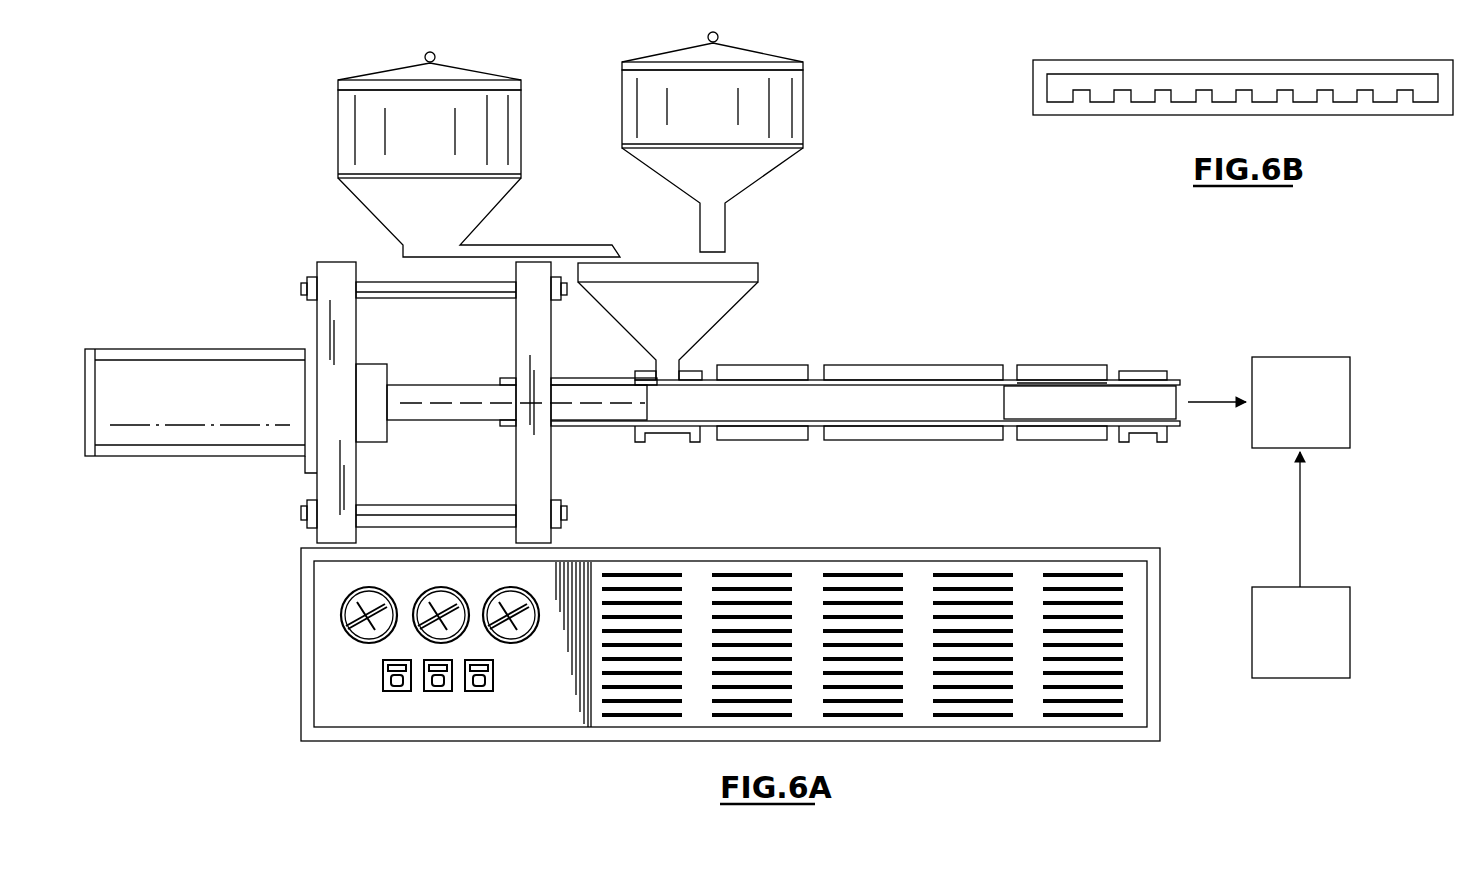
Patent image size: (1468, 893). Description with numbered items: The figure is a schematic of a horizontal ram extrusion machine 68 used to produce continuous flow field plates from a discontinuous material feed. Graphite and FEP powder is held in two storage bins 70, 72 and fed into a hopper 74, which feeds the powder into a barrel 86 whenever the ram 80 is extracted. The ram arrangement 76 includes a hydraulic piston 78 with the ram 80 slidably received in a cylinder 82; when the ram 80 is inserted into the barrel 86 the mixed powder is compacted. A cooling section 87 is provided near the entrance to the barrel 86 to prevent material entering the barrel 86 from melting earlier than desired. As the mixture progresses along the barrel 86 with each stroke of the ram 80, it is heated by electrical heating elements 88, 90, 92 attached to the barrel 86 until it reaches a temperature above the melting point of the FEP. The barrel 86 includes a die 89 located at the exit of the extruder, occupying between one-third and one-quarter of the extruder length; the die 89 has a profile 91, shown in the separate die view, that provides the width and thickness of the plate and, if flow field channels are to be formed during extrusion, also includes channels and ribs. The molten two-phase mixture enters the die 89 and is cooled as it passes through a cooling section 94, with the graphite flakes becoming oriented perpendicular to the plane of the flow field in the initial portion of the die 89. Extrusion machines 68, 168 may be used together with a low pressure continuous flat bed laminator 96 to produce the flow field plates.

In FIG. 6A, the ram extrusion machine 68 is at (858, 138).
In FIG. 6A, the storage bin 70 is at (510, 108).
In FIG. 6A, the storage bin 72 is at (800, 92).
In FIG. 6A, the hopper 74 is at (710, 297).
In FIG. 6A, the ram arrangement 76 is at (323, 402).
In FIG. 6A, the hydraulic piston 78 is at (242, 373).
In FIG. 6A, the ram 80 is at (441, 410).
In FIG. 6A, the cylinder 82 is at (596, 425).
In FIG. 6A, the barrel 86 is at (865, 435).
In FIG. 6A, the cooling section 87 is at (665, 430).
In FIG. 6A, the electrical heating element 88 is at (765, 365).
In FIG. 6A, the die 89 is at (1083, 382).
In FIG. 6B, the die 89 is at (1243, 103).
In FIG. 6A, the electrical heating element 90 is at (940, 365).
In FIG. 6B, the profile 91 is at (1294, 73).
In FIG. 6A, the electrical heating element 92 is at (1035, 365).
In FIG. 6A, the cooling section 94 is at (1150, 371).
In FIG. 6A, the low pressure continuous flat bed laminator 96 is at (1300, 357).
In FIG. 6A, the extrusion machine 168 is at (1249, 637).